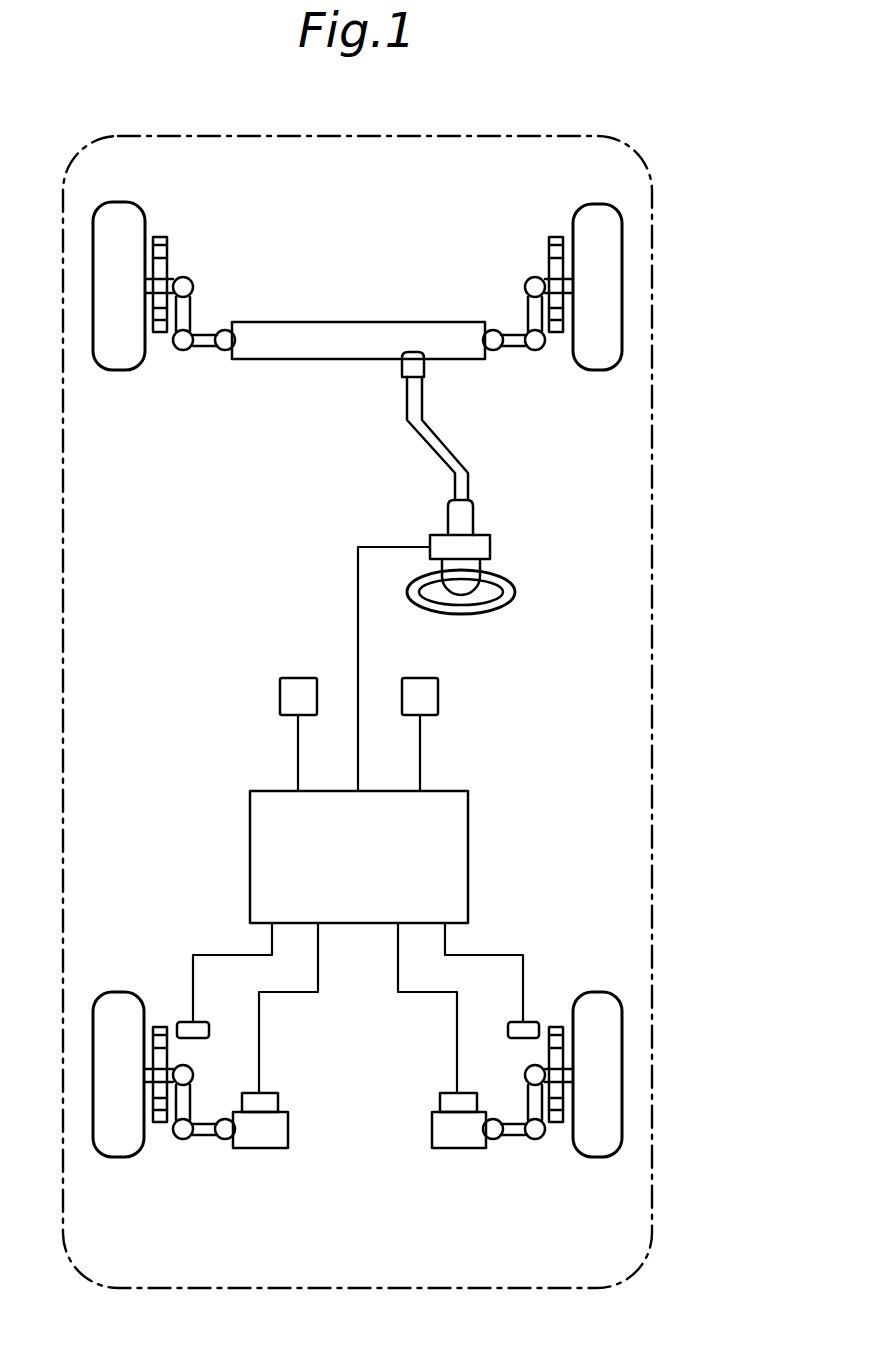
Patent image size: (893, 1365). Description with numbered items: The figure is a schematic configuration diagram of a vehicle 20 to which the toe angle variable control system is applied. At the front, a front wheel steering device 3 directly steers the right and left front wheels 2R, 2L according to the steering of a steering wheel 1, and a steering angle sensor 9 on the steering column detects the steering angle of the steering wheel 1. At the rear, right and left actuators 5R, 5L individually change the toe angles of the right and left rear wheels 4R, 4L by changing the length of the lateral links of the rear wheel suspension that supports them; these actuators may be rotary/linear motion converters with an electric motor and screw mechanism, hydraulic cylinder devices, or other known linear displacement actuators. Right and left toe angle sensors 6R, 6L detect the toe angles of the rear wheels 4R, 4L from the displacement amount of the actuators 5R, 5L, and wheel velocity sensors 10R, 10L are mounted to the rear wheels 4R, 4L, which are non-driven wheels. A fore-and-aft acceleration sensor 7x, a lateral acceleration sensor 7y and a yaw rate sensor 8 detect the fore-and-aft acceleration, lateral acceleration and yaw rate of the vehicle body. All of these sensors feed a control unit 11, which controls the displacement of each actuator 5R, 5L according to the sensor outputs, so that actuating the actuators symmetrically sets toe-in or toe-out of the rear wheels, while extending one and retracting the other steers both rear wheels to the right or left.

The steering wheel 1 is at (493, 605).
The left front wheel 2L is at (122, 212).
The right front wheel 2R is at (600, 212).
The front wheel steering device 3 is at (392, 325).
The left rear wheel 4L is at (118, 1157).
The right rear wheel 4R is at (598, 1157).
The left actuator 5L is at (257, 1140).
The right actuator 5R is at (458, 1135).
The left toe angle sensor 6L is at (265, 1098).
The right toe angle sensor 6R is at (450, 1098).
The fore-and-aft acceleration sensor 7x is at (303, 661).
The lateral acceleration sensor 7y is at (300, 683).
The yaw rate sensor 8 is at (422, 683).
The steering angle sensor 9 is at (490, 548).
The left wheel velocity sensor 10L is at (183, 1020).
The right wheel velocity sensor 10R is at (533, 1020).
The control unit 11 is at (457, 868).
The vehicle 20 is at (668, 259).